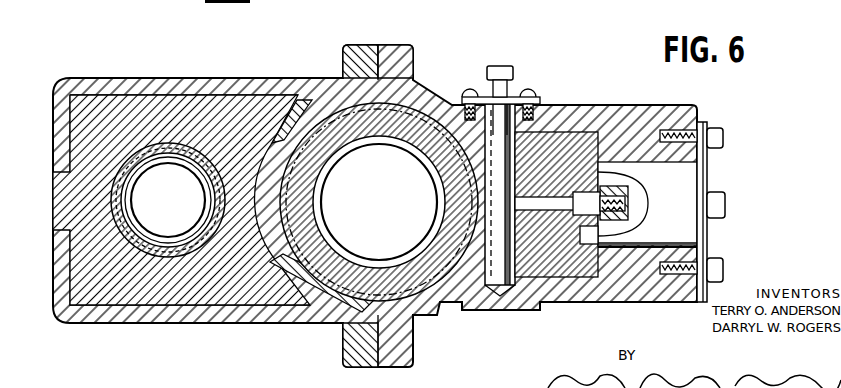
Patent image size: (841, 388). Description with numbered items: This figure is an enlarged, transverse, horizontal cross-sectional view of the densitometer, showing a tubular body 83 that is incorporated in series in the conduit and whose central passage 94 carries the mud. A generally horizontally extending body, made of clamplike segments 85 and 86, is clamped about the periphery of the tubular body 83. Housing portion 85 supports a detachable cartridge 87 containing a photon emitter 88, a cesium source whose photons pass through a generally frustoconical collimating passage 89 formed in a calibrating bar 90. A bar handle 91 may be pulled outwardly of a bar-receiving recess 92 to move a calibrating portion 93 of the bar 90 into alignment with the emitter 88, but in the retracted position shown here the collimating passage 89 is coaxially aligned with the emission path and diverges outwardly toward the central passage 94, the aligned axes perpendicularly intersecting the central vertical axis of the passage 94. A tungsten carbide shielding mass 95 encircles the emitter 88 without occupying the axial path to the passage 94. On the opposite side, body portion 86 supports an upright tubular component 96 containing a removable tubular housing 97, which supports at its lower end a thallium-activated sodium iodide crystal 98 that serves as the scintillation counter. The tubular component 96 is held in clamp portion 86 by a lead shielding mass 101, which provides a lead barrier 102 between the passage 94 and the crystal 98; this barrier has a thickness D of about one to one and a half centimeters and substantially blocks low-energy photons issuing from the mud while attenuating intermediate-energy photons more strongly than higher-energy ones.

The tubular body 83 is at (335, 90).
The clamplike segment 85 is at (404, 56).
The clamplike segment 86 is at (232, 78).
The detachable cartridge 87 is at (620, 165).
The photon emitter 88 is at (594, 245).
The collimating passage 89 is at (484, 187).
The calibrating bar 90 is at (488, 97).
The bar handle 91 is at (500, 66).
The bar-receiving recess 92 is at (520, 245).
The calibrating portion 93 is at (486, 308).
The central passage 94 is at (372, 195).
The tungsten carbide shielding mass 95 is at (548, 130).
The tubular component 96 is at (112, 214).
The tubular housing 97 is at (118, 192).
The sodium iodide crystal 98 is at (120, 200).
The lead shielding mass 101 is at (264, 100).
The lead barrier 102 is at (250, 226).
The thickness D is at (274, 203).